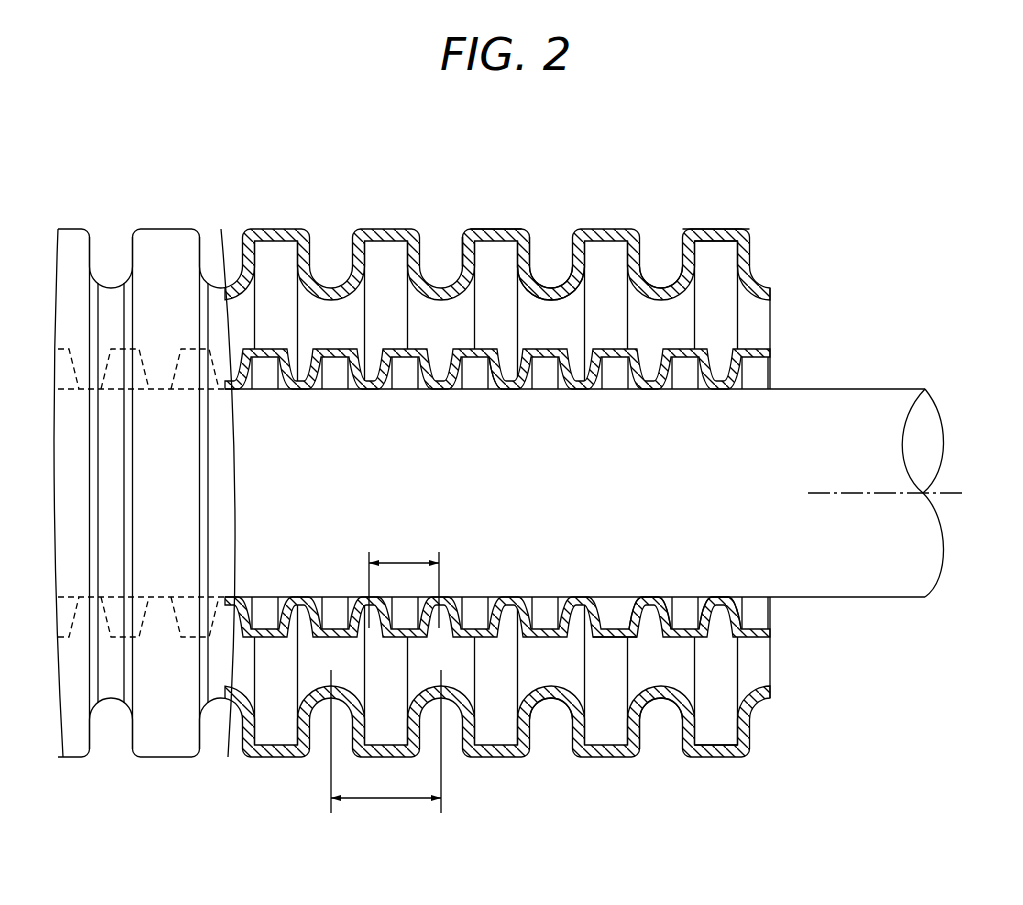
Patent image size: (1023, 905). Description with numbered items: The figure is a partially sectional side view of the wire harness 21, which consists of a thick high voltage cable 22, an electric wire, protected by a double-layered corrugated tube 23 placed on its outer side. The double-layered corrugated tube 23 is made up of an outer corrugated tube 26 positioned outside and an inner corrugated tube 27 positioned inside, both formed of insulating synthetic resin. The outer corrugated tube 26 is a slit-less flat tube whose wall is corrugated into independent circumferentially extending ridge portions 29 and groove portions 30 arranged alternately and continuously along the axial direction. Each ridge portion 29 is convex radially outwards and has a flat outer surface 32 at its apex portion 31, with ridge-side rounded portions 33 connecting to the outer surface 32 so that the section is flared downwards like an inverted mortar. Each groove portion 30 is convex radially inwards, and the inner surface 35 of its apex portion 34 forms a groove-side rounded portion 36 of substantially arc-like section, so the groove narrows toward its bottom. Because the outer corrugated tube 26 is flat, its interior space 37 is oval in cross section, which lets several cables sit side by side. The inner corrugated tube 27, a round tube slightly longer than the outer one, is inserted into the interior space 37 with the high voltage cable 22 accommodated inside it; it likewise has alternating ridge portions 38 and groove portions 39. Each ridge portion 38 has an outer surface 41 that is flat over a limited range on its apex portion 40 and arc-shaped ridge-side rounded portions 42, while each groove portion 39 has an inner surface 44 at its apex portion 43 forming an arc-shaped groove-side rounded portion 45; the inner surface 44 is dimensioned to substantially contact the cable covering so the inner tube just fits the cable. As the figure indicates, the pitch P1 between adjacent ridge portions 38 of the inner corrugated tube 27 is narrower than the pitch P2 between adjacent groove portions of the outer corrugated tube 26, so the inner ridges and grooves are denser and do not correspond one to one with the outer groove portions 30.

The wire harness 21 is at (509, 460).
The high voltage cable 22 is at (897, 389).
The double-layered corrugated tube 23 is at (505, 432).
The outer corrugated tube 26 is at (754, 246).
The inner corrugated tube 27 is at (712, 350).
The ridge portion 29 is at (717, 229).
The groove portion 30 is at (660, 286).
The apex portion 31 is at (502, 229).
The outer surface 32 is at (483, 229).
The ridge-side rounded portion 33 is at (462, 229).
The apex portion 34 is at (548, 300).
The inner surface 35 is at (554, 300).
The groove-side rounded portion 36 is at (549, 298).
The interior space 37 is at (708, 302).
The ridge portion 38 is at (732, 712).
The groove portion 39 is at (716, 630).
The apex portion 40 is at (604, 640).
The outer surface 41 is at (640, 740).
The ridge-side rounded portion 42 is at (663, 688).
The apex portion 43 is at (651, 598).
The inner surface 44 is at (643, 598).
The groove-side rounded portion 45 is at (665, 596).
The pitch P1 is at (403, 562).
The pitch P2 is at (386, 741).